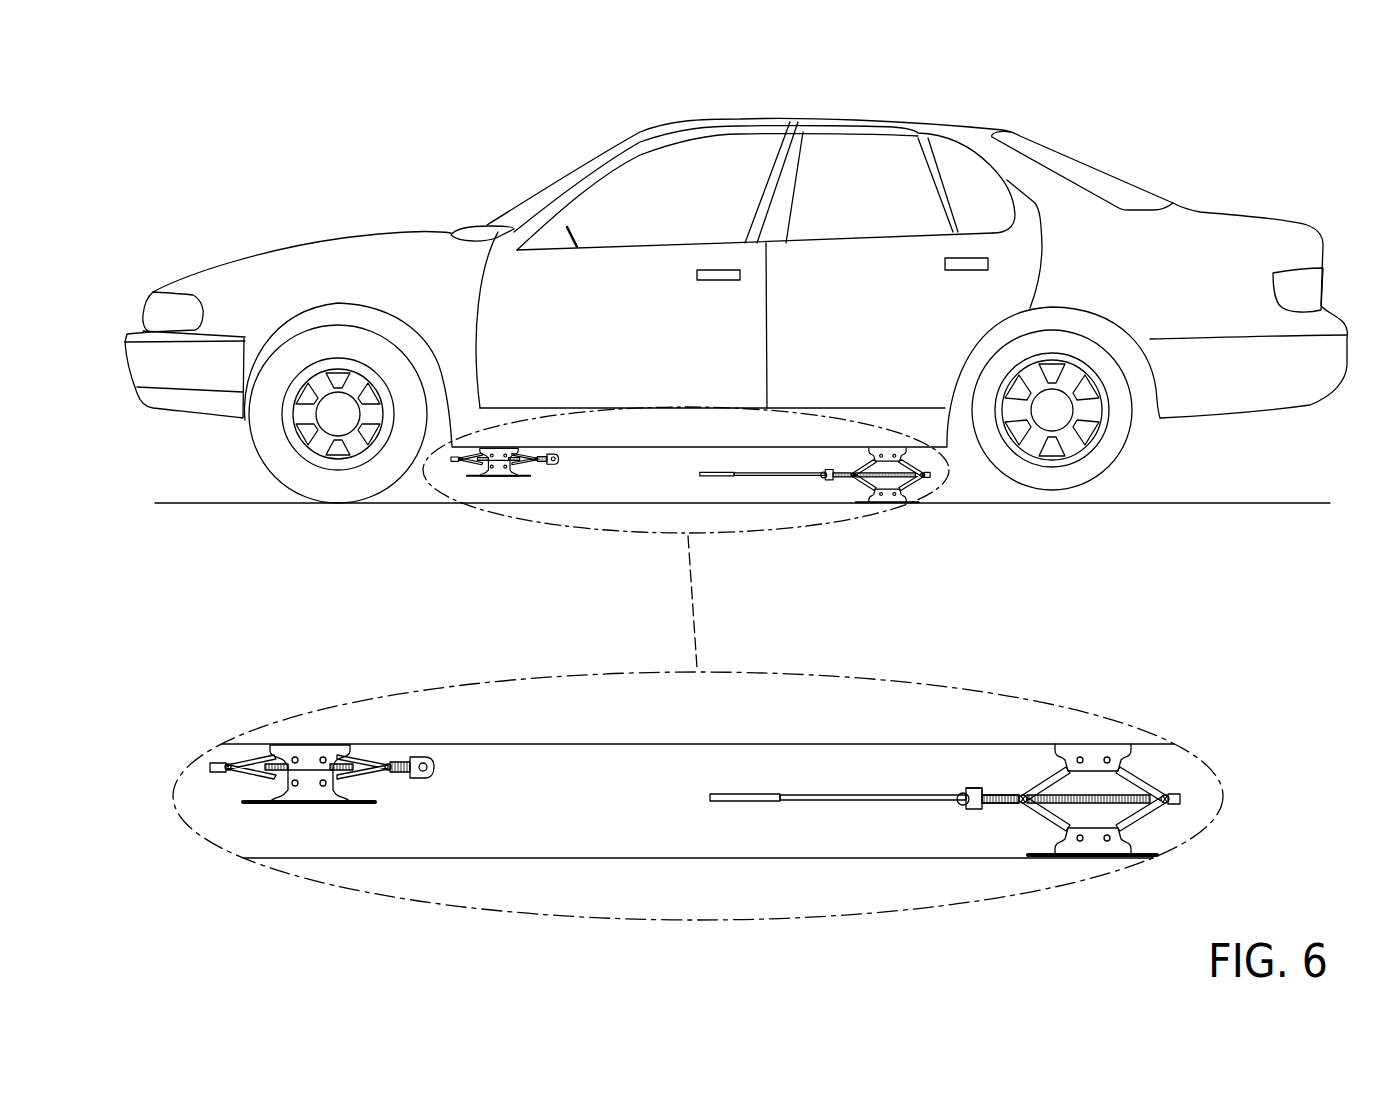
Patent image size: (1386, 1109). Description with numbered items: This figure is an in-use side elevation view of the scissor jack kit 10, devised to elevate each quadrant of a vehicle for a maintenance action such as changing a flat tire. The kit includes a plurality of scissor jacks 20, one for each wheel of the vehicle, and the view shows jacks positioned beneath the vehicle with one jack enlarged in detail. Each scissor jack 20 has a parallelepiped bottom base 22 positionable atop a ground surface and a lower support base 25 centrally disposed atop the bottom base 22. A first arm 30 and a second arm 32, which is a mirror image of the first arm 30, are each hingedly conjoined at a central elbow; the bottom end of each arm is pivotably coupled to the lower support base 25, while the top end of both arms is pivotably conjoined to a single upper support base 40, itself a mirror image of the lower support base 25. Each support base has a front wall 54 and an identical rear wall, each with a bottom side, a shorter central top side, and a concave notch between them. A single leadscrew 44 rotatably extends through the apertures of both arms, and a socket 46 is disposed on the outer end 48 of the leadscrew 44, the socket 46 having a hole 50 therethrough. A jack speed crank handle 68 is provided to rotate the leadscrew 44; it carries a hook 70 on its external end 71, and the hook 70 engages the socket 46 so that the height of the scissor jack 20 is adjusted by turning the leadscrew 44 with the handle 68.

The scissor jack kit 10 is at (340, 172).
The scissor jack 20 is at (1008, 721).
The bottom base 22 is at (1163, 852).
The lower support base 25 is at (1143, 858).
The first arm 30 is at (1148, 788).
The second arm 32 is at (1041, 774).
The upper support base 40 is at (1143, 748).
The leadscrew 44 is at (1145, 812).
The socket 46 is at (973, 793).
The outer end 48 is at (998, 805).
The hole 50 is at (985, 807).
The front wall 54 is at (1098, 850).
The jack speed crank handle 68 is at (843, 797).
The hook 70 is at (970, 812).
The external end 71 is at (960, 803).